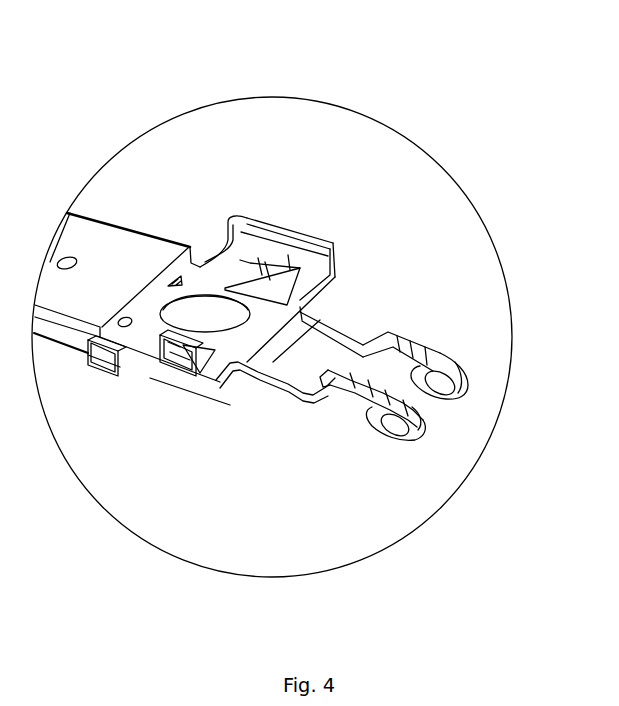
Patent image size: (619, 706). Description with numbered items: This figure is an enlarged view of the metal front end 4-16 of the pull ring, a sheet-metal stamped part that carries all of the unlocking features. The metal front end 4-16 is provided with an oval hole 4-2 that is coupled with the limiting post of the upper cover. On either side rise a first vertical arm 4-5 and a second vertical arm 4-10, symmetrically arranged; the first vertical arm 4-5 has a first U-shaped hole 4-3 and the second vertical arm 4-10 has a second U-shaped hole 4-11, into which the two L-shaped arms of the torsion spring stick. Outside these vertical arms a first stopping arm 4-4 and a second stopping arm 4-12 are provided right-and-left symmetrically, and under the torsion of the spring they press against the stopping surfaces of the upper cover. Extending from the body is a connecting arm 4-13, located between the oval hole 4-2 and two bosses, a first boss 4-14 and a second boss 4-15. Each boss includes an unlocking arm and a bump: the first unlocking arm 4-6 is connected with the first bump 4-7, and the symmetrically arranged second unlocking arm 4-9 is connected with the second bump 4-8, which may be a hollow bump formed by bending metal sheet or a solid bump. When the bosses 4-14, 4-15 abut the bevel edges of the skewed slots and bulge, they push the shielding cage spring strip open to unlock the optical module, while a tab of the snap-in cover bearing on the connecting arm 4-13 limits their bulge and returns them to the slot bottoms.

The oval hole 4-2 is at (216, 318).
The first U-shaped hole 4-3 is at (240, 248).
The first stopping arm 4-4 is at (298, 252).
The first vertical arm 4-5 is at (338, 287).
The first unlocking arm 4-6 is at (408, 338).
The first bump 4-7 is at (447, 375).
The second bump 4-8 is at (378, 415).
The second unlocking arm 4-9 is at (353, 387).
The second vertical arm 4-10 is at (180, 353).
The second U-shaped hole 4-11 is at (168, 345).
The second stopping arm 4-12 is at (124, 360).
The connecting arm 4-13 is at (290, 355).
The first boss 4-14 is at (275, 485).
The second boss 4-15 is at (517, 302).
The metal front end 4-16 is at (408, 137).